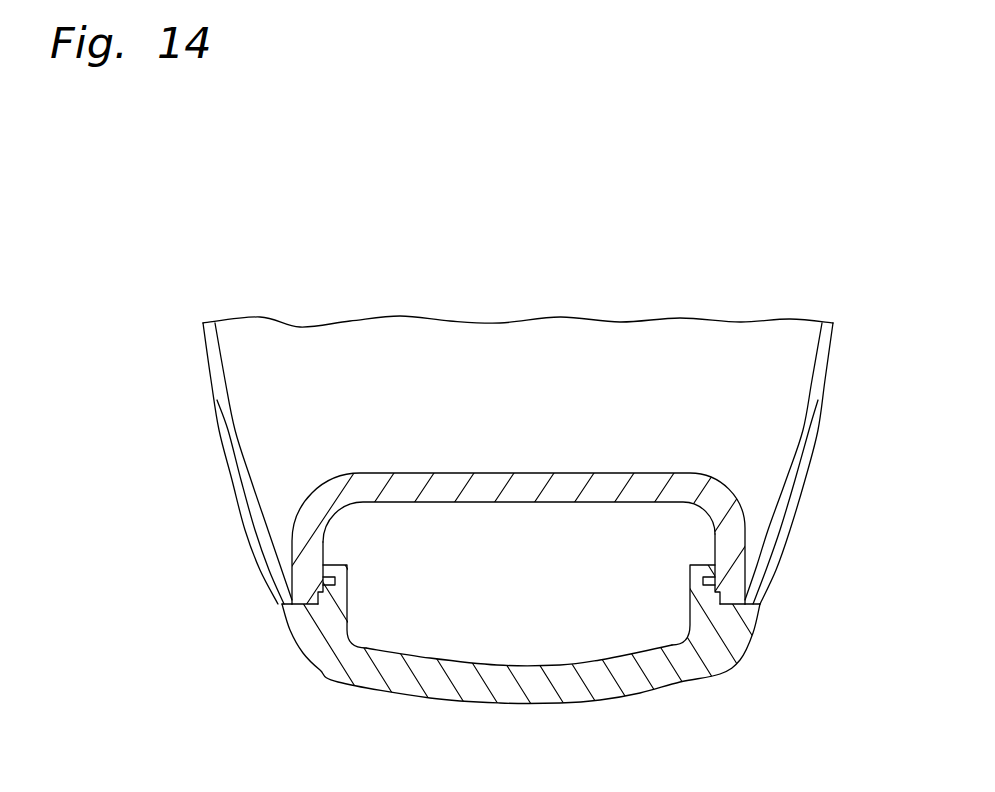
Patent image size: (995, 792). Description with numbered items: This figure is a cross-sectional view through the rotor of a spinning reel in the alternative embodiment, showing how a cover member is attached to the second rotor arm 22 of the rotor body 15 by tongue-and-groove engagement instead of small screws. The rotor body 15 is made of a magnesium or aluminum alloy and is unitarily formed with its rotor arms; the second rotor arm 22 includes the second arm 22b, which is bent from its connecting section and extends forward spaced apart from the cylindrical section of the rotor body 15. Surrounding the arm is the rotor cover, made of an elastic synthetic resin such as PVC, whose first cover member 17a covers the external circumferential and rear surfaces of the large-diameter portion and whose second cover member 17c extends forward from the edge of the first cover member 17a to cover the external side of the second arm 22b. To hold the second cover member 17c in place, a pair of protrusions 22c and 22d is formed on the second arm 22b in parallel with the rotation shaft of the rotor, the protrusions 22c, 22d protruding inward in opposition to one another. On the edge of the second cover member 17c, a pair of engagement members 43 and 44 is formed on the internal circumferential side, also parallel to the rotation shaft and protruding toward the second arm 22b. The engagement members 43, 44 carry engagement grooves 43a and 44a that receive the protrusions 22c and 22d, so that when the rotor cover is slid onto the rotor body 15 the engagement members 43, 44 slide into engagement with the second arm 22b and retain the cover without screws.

The rotor body 15 is at (592, 447).
The first cover member 17a is at (780, 542).
The second cover member 17c is at (640, 682).
The second rotor arm 22 is at (667, 449).
The second arm 22b is at (553, 490).
The protrusion 22c is at (345, 615).
The protrusion 22d is at (718, 612).
The engagement member 43 is at (379, 588).
The engagement groove 43a is at (335, 582).
The engagement member 44 is at (637, 589).
The engagement groove 44a is at (703, 581).